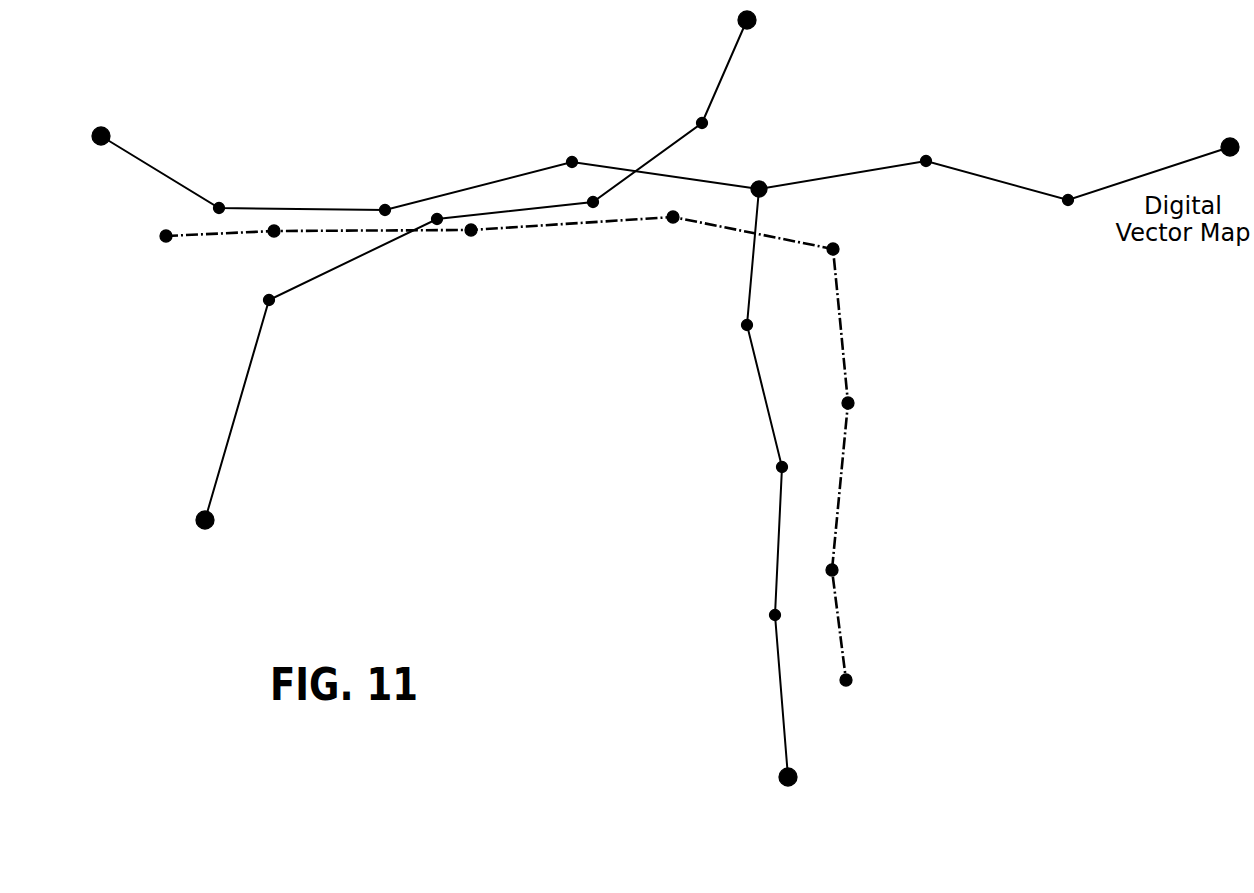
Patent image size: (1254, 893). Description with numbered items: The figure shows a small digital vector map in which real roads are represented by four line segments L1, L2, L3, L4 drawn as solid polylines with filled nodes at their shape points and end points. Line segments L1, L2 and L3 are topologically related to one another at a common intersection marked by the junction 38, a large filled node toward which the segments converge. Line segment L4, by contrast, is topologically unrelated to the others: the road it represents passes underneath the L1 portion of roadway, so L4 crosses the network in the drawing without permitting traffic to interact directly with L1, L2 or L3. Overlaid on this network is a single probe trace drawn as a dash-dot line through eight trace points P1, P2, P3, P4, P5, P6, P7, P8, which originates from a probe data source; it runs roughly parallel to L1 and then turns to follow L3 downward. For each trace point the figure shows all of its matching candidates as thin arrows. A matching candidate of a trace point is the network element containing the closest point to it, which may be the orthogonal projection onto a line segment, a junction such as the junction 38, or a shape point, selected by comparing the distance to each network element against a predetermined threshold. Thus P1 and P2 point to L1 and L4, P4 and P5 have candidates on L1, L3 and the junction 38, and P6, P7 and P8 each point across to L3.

The junction 38 is at (759, 184).
The line segment L1 is at (425, 171).
The line segment L2 is at (999, 172).
The line segment L3 is at (759, 487).
The line segment L4 is at (476, 270).
The trace point P1 is at (188, 191).
The trace point P2 is at (274, 210).
The trace point P3 is at (462, 192).
The trace point P4 is at (759, 189).
The trace point P5 is at (759, 189).
The trace point P6 is at (773, 415).
The trace point P7 is at (780, 570).
The trace point P8 is at (785, 686).